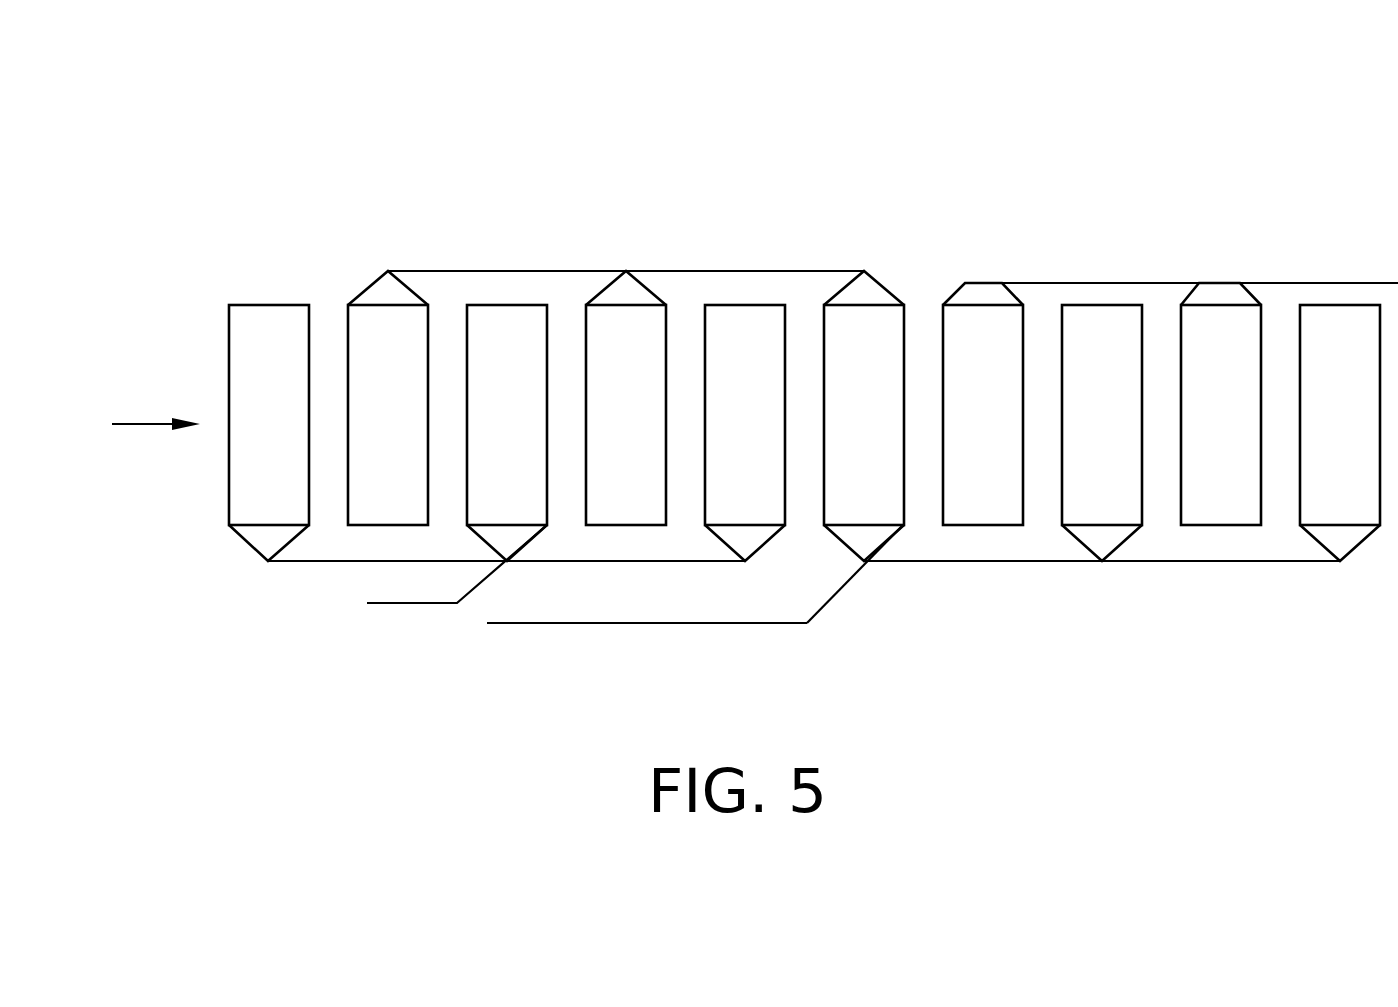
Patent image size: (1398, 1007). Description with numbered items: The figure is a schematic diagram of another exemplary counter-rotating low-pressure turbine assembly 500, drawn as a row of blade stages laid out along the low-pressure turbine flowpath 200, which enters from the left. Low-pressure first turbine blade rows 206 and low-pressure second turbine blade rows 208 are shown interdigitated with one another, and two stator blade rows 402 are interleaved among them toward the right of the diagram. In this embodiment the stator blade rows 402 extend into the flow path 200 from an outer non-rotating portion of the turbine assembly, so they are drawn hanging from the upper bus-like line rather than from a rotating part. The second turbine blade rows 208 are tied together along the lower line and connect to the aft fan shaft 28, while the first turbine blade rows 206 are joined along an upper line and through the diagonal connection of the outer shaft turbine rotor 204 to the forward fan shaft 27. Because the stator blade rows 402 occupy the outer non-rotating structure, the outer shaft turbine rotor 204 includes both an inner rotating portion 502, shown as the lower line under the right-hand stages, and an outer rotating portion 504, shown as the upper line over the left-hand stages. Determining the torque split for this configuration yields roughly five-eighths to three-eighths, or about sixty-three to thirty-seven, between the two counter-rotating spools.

The module assembly 500 is at (732, 385).
The outer rotating portion 504 is at (692, 270).
The inner rotating portion 502 is at (1052, 565).
The low-pressure turbine flowpath 200 is at (149, 423).
The second turbine blade rows 208 is at (773, 484).
The first turbine blade rows 206 is at (1368, 484).
The stator blade rows 402 is at (1249, 484).
The aft fan shaft 28 is at (390, 605).
The forward fan shaft 27 is at (669, 625).
The outer shaft turbine rotor 204 is at (835, 595).